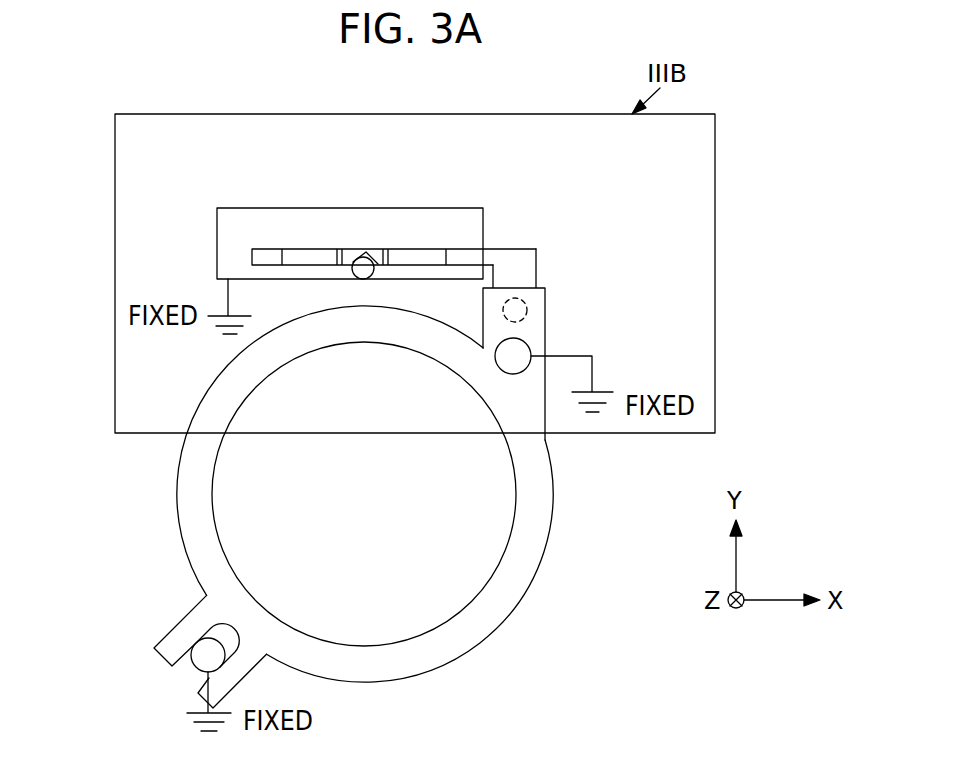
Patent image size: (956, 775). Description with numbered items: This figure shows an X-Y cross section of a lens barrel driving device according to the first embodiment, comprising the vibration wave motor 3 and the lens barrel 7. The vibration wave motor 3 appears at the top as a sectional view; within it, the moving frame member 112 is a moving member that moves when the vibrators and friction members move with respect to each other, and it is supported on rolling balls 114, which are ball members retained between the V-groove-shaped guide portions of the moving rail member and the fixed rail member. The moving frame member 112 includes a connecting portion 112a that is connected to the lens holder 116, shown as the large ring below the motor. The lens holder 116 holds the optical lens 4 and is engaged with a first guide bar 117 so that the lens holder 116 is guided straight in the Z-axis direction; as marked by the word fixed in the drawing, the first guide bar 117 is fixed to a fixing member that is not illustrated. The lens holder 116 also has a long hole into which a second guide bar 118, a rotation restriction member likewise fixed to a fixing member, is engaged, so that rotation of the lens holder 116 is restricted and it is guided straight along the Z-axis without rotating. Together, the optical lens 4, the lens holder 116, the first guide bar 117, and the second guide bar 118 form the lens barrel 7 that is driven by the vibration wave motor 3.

The vibration wave motor 3 is at (253, 217).
The rolling balls 114 is at (357, 257).
The moving frame member 112 is at (516, 248).
The connecting portion 112a is at (527, 310).
The first guide bar 117 is at (520, 349).
The lens holder 116 is at (528, 525).
The optical lens 4 is at (477, 553).
The second guide bar 118 is at (203, 653).
The lens barrel 7 is at (562, 641).